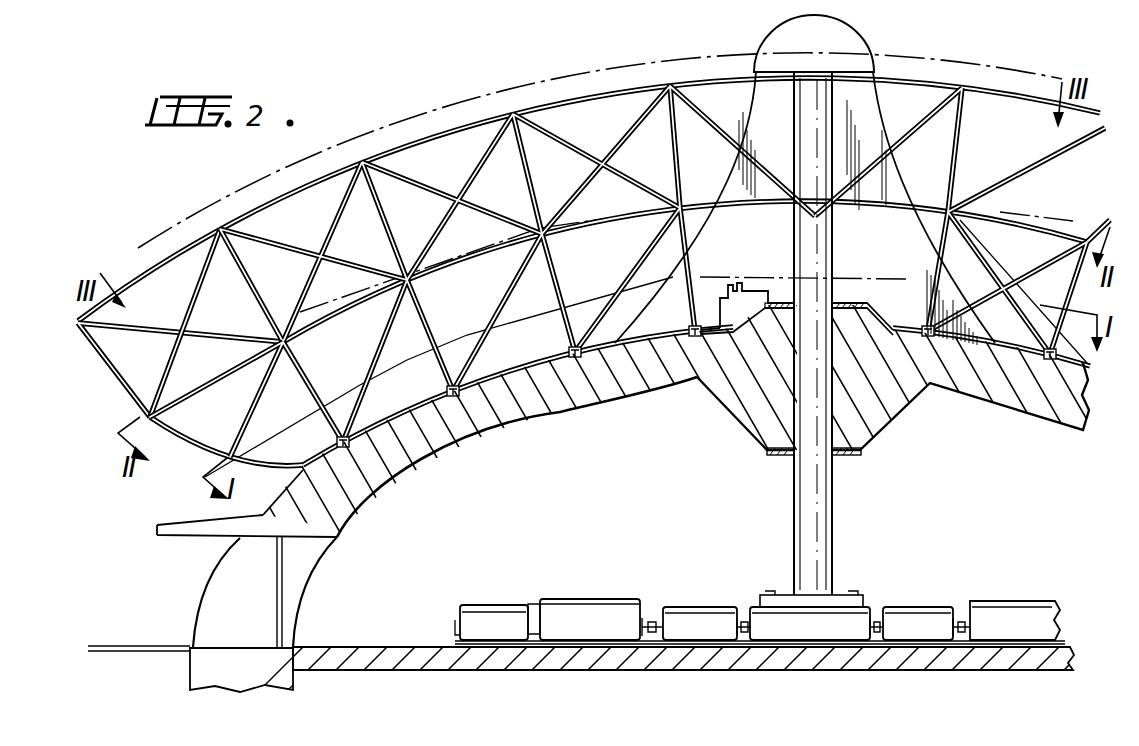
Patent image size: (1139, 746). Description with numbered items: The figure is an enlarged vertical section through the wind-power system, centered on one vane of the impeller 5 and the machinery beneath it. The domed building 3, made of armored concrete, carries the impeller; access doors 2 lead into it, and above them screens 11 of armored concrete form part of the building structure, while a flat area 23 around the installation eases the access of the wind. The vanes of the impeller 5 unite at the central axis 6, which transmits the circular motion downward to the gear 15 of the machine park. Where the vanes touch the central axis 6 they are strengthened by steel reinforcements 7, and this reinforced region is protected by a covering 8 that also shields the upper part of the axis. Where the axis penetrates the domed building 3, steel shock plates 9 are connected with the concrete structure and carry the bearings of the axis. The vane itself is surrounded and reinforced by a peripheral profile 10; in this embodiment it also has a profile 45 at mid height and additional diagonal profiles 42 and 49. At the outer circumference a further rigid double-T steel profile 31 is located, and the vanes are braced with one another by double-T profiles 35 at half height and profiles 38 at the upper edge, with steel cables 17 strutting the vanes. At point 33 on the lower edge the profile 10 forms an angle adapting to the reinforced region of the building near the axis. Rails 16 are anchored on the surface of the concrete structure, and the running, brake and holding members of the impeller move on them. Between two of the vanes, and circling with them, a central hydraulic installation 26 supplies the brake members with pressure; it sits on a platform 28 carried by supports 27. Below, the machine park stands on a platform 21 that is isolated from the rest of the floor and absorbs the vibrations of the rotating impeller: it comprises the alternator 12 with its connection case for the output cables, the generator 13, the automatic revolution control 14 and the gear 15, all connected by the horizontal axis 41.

The access doors 2 is at (282, 585).
The domed building 3 is at (320, 538).
The impeller 5 is at (975, 140).
The central axis 6 is at (810, 126).
The reinforcements 7 is at (879, 241).
The covering 8 is at (778, 47).
The shock plates 9 is at (862, 301).
The peripheral reinforcement profile 10 is at (443, 132).
The screens 11 is at (175, 536).
The alternator 12 is at (497, 606).
The generator 13 is at (578, 600).
The automatic revolution control 14 is at (690, 607).
The gear 15 is at (850, 605).
The rails 16 is at (440, 450).
The steel cables 17 is at (395, 661).
The platform 21 is at (778, 640).
The flat area 23 is at (157, 645).
The central hydraulic installation 26 is at (745, 284).
The supports 27 is at (720, 302).
The platform 28 is at (747, 313).
The rigid profile 31 is at (337, 503).
The point of the lower edge 33 is at (765, 300).
The profile 35 is at (150, 417).
The profile 38 is at (78, 330).
The horizontal axis 41 is at (648, 620).
The diagonal profile 42 is at (547, 284).
The mid-height profile 45 is at (633, 215).
The diagonal profile 49 is at (298, 393).